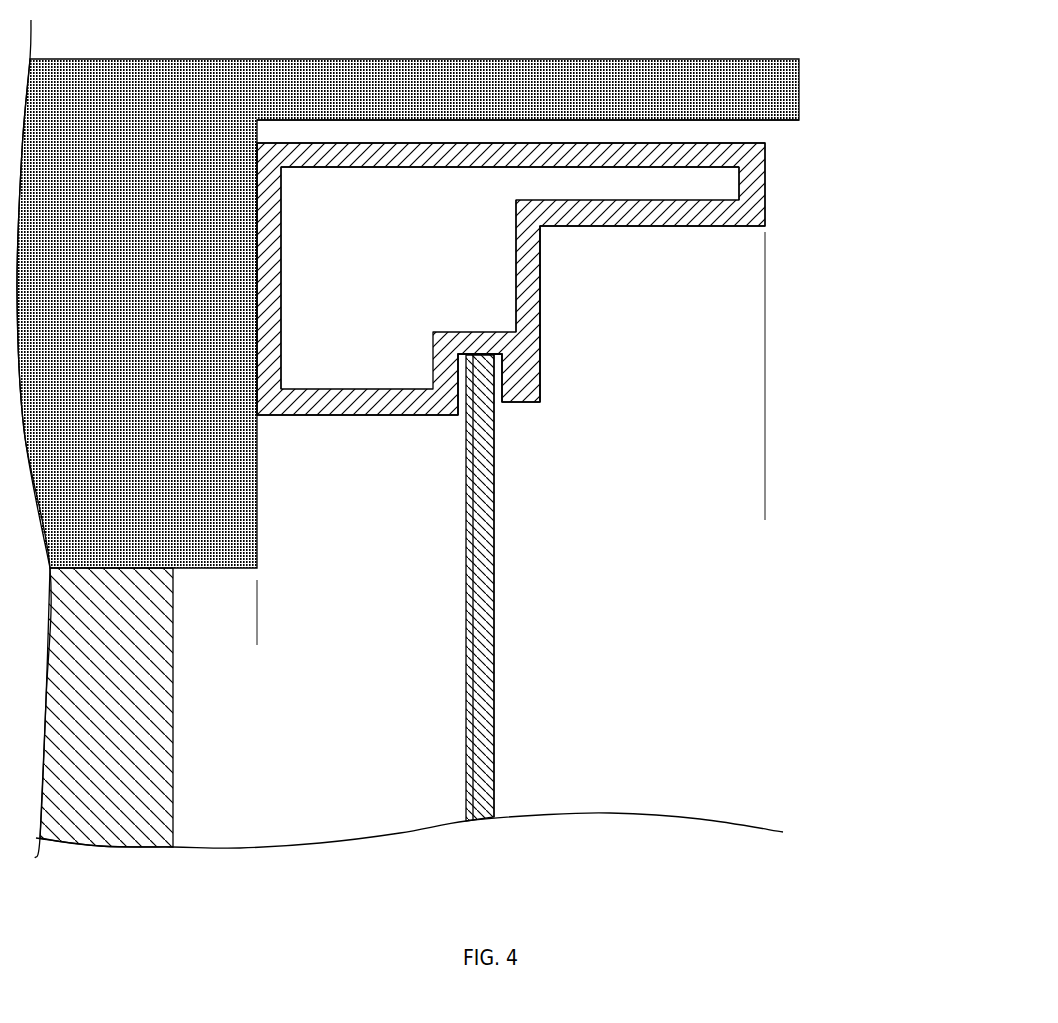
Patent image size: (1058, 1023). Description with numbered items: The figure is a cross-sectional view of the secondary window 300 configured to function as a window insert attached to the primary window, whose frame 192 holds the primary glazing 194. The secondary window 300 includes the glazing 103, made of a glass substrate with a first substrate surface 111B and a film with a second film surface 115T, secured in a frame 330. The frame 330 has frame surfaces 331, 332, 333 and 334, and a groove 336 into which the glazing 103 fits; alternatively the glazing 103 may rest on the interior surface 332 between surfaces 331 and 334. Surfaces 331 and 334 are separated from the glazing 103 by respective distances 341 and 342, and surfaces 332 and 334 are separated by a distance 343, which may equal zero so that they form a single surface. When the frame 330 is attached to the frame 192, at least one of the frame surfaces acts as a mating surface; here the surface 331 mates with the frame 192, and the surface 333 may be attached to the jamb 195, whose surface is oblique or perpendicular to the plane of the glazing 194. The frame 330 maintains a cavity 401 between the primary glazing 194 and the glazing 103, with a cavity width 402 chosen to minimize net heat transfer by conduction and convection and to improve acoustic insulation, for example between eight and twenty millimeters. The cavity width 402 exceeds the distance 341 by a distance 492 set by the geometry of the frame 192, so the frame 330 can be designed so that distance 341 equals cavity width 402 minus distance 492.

The secondary window 300 is at (838, 135).
The frame 330 is at (670, 145).
The frame surface 331 is at (256, 260).
The frame surface 332 is at (541, 312).
The frame surface 333 is at (552, 142).
The frame surface 334 is at (767, 202).
The groove 336 is at (500, 400).
The distance 341 is at (466, 498).
The distance 342 is at (765, 498).
The distance 343 is at (765, 378).
The frame 192 is at (140, 326).
The glazing 194 is at (165, 726).
The jamb 195 is at (775, 123).
The cavity 401 is at (358, 726).
The cavity width 402 is at (466, 775).
The distance 492 is at (257, 621).
The glazing 103 is at (530, 748).
The second film surface 115T is at (465, 663).
The first substrate surface 111B is at (495, 663).